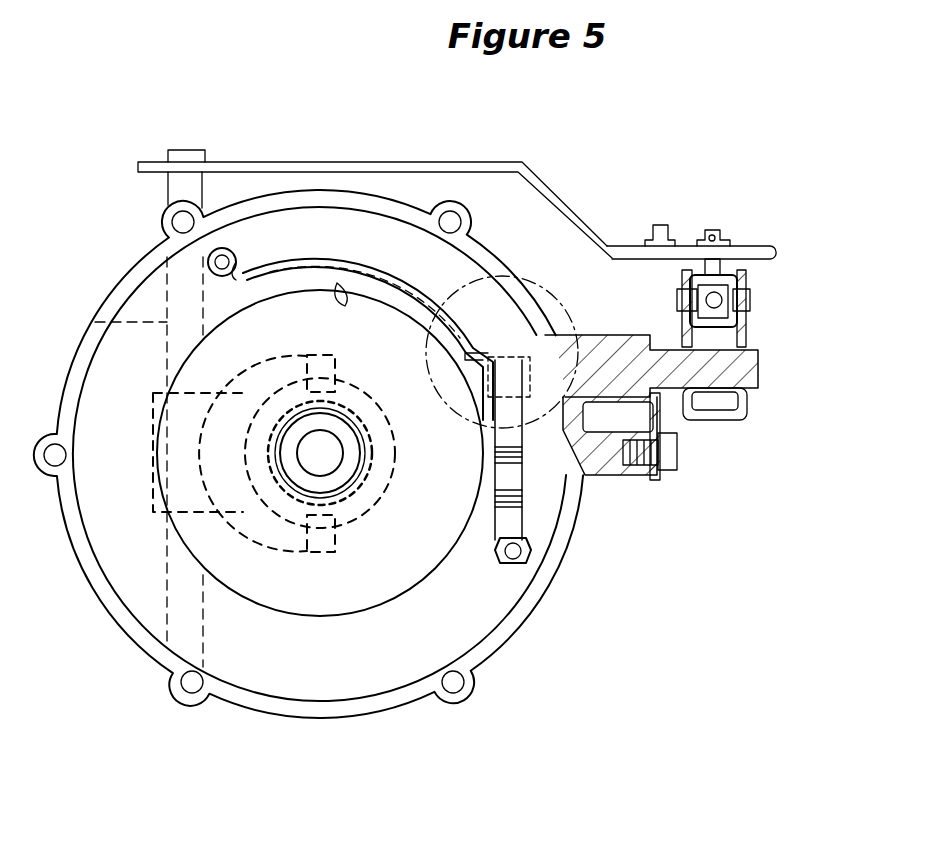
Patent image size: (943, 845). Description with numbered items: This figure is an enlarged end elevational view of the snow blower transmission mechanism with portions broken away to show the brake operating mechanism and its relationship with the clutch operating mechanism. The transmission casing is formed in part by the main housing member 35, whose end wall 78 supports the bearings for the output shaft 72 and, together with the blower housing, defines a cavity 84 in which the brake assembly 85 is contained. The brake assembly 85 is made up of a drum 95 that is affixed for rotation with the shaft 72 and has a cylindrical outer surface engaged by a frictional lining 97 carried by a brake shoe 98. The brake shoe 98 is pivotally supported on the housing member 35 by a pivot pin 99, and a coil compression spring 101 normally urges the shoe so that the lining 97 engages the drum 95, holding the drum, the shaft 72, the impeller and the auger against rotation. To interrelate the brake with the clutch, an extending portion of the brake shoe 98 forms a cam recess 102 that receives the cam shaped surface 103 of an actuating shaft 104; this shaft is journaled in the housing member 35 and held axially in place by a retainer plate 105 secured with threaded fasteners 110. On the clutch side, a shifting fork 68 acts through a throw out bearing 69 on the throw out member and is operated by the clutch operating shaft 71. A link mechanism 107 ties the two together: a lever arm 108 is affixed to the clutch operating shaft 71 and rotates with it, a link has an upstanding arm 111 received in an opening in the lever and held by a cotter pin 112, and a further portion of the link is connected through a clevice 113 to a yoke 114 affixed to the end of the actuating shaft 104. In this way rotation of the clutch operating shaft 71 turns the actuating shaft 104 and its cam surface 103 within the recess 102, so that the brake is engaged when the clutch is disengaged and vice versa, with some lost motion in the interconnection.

The main housing member 35 is at (538, 602).
The shifting fork 68 is at (260, 537).
The throw out bearing 69 is at (387, 463).
The clutch operating shaft 71 is at (95, 322).
The output shaft 72 is at (340, 428).
The end wall 78 is at (113, 513).
The cavity 84 is at (280, 662).
The brake assembly 85 is at (323, 253).
The drum 95 is at (355, 597).
The frictional lining 97 is at (340, 302).
The brake shoe 98 is at (497, 275).
The pivot pin 99 is at (221, 248).
The coil compression spring 101 is at (527, 495).
The cam recess 102 is at (560, 340).
The cam shaped surface 103 is at (483, 408).
The actuating shaft 104 is at (616, 367).
The retainer plate 105 is at (662, 415).
The link mechanism 107 is at (757, 288).
The lever arm 108 is at (445, 168).
The threaded fasteners 110 is at (673, 473).
The upstanding arm 111 is at (777, 267).
The cotter pin 112 is at (727, 238).
The clevice 113 is at (730, 305).
The yoke 114 is at (747, 405).